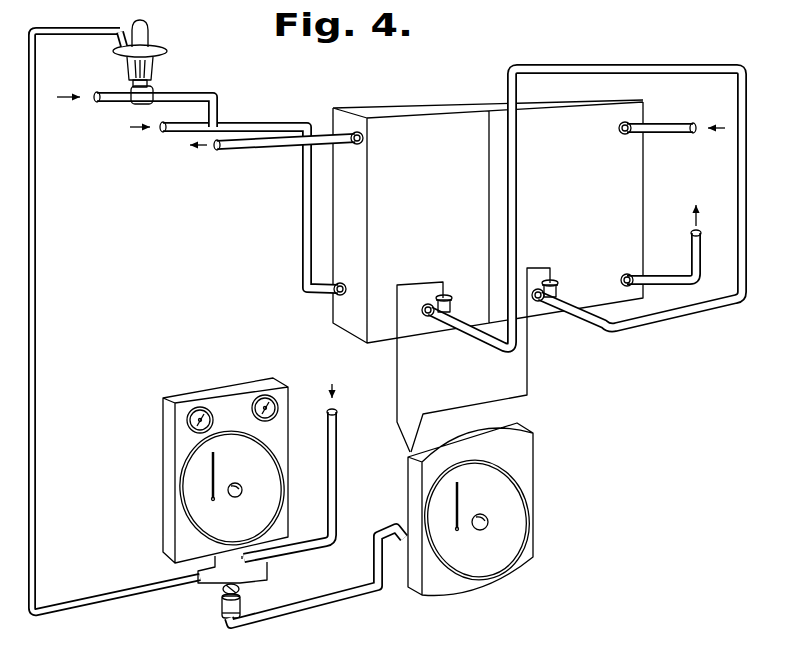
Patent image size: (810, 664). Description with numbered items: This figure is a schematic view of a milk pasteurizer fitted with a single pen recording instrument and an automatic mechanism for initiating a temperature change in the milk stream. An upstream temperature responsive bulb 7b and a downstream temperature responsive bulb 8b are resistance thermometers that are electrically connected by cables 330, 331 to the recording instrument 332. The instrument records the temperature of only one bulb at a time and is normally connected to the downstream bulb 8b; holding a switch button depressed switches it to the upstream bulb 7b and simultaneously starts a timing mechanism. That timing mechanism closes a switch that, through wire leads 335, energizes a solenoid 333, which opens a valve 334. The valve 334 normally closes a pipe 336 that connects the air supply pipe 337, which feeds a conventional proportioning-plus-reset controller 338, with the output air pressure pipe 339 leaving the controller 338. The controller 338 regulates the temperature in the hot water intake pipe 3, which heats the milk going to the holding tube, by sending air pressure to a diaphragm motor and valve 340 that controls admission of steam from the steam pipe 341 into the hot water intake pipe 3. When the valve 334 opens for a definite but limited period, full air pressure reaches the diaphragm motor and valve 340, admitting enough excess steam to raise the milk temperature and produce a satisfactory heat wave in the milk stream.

The hot water intake pipe 3 is at (302, 192).
The upstream temperature responsive bulb 7b is at (447, 299).
The downstream temperature responsive bulb 8b is at (556, 291).
The cable 330 is at (397, 380).
The cable 331 is at (528, 368).
The recording instrument 332 is at (523, 443).
The solenoid 333 is at (218, 604).
The valve 334 is at (241, 593).
The wire leads 335 is at (342, 597).
The pipe 336 is at (195, 592).
The air supply pipe 337 is at (333, 473).
The proportioning-plus-reset controller 338 is at (170, 424).
The output air pressure pipe 339 is at (38, 209).
The diaphragm motor and valve 340 is at (152, 46).
The steam pipe 341 is at (117, 92).